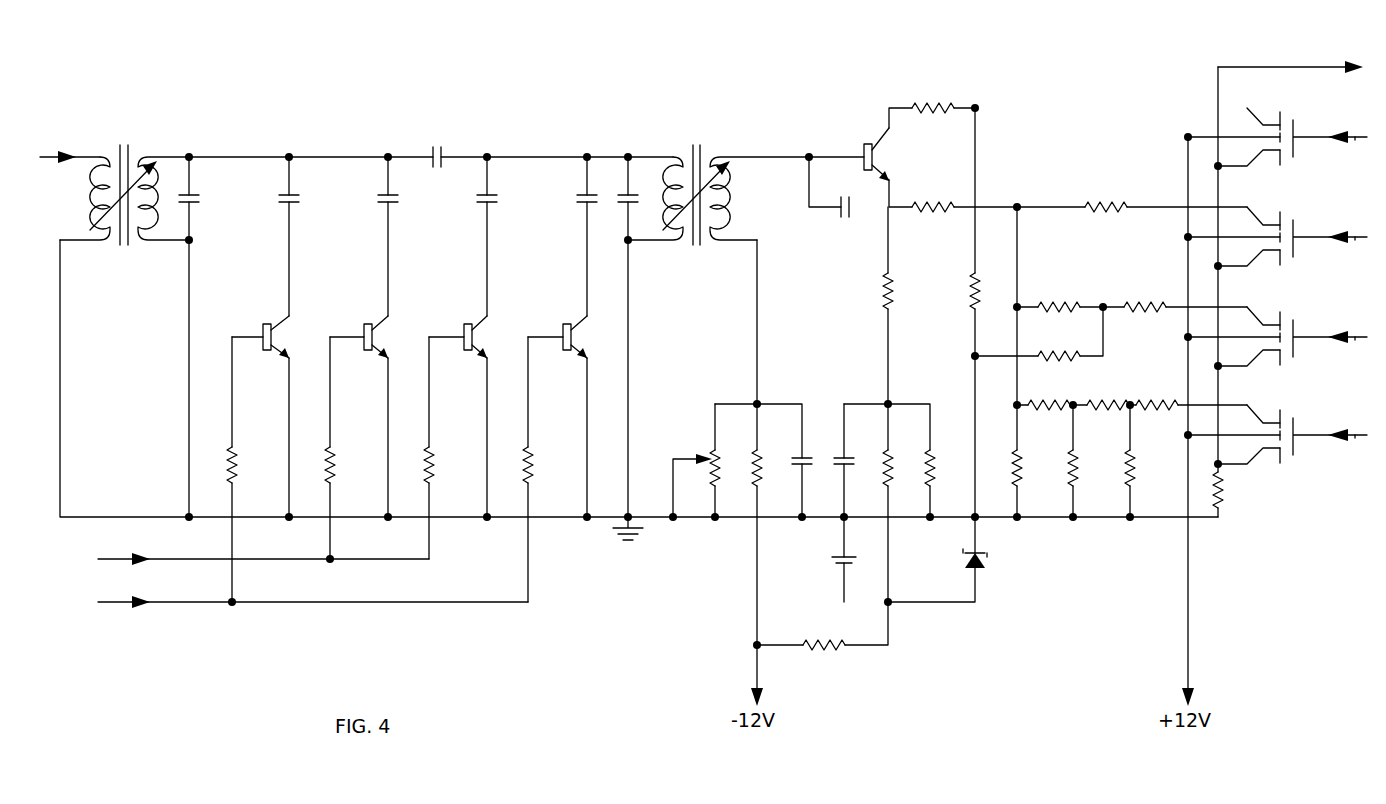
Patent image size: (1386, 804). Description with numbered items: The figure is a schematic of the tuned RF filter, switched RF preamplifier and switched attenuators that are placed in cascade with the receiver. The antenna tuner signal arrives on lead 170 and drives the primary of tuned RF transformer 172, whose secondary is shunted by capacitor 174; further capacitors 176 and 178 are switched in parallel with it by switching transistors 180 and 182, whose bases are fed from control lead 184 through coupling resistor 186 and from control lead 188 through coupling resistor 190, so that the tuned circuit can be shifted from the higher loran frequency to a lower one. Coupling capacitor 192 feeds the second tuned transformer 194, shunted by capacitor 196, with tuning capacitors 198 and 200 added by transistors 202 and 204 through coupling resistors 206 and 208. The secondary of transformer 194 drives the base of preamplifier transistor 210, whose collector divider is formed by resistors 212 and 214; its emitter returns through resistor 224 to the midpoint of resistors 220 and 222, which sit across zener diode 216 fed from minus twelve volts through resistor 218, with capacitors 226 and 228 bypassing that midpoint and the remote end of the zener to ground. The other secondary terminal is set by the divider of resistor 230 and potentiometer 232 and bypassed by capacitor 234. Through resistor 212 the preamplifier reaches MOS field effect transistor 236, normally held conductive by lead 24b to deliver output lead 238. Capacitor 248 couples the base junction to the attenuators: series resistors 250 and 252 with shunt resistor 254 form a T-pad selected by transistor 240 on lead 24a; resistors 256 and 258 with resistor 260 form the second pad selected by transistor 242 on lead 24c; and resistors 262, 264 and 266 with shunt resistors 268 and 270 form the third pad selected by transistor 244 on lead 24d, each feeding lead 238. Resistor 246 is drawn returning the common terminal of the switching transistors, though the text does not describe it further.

The lead 170 is at (57, 154).
The tuned RF transformer 172 is at (124, 148).
The capacitor 174 is at (200, 202).
The capacitor 176 is at (300, 203).
The capacitor 178 is at (399, 203).
The switching transistor 180 is at (266, 320).
The switching transistor 182 is at (366, 320).
The control lead 184 is at (194, 602).
The coupling resistor 186 is at (236, 460).
The control lead 188 is at (191, 558).
The coupling resistor 190 is at (333, 460).
The coupling capacitor 192 is at (441, 148).
The second tuned transformer 194 is at (705, 148).
The capacitor 196 is at (621, 190).
The tuning capacitor 198 is at (574, 197).
The tuning capacitor 200 is at (498, 203).
The transistor 202 is at (563, 320).
The transistor 204 is at (463, 320).
The coupling resistor 206 is at (533, 460).
The coupling resistor 208 is at (434, 460).
The transistor 210 is at (862, 140).
The resistor 212 is at (936, 100).
The resistor 214 is at (974, 293).
The zener diode 216 is at (955, 554).
The resistor 218 is at (818, 650).
The resistor 220 is at (936, 459).
The resistor 222 is at (894, 457).
The resistor 224 is at (881, 291).
The capacitor 226 is at (845, 451).
The capacitor 228 is at (835, 565).
The resistor 230 is at (754, 477).
The potentiometer 232 is at (714, 452).
The capacitor 234 is at (805, 450).
The MOS field effect transistor 236 is at (1297, 130).
The output lead 238 is at (1335, 62).
The MOS field effect transistor 240 is at (1297, 230).
The MOS field effect transistor 242 is at (1297, 330).
The MOS field effect transistor 244 is at (1297, 428).
The resistor 246 is at (1224, 499).
The capacitor 248 is at (844, 219).
The resistor 250 is at (927, 204).
The resistor 252 is at (1091, 203).
The resistor 254 is at (1056, 436).
The resistor 256 is at (1038, 307).
The resistor 258 is at (1144, 304).
The resistor 260 is at (1070, 354).
The resistor 262 is at (1035, 403).
The resistor 264 is at (1098, 403).
The resistor 266 is at (1166, 400).
The resistor 268 is at (1113, 436).
The resistor 270 is at (1170, 436).
The lead 24a is at (1362, 248).
The lead 24b is at (1362, 148).
The lead 24c is at (1362, 348).
The lead 24d is at (1362, 446).